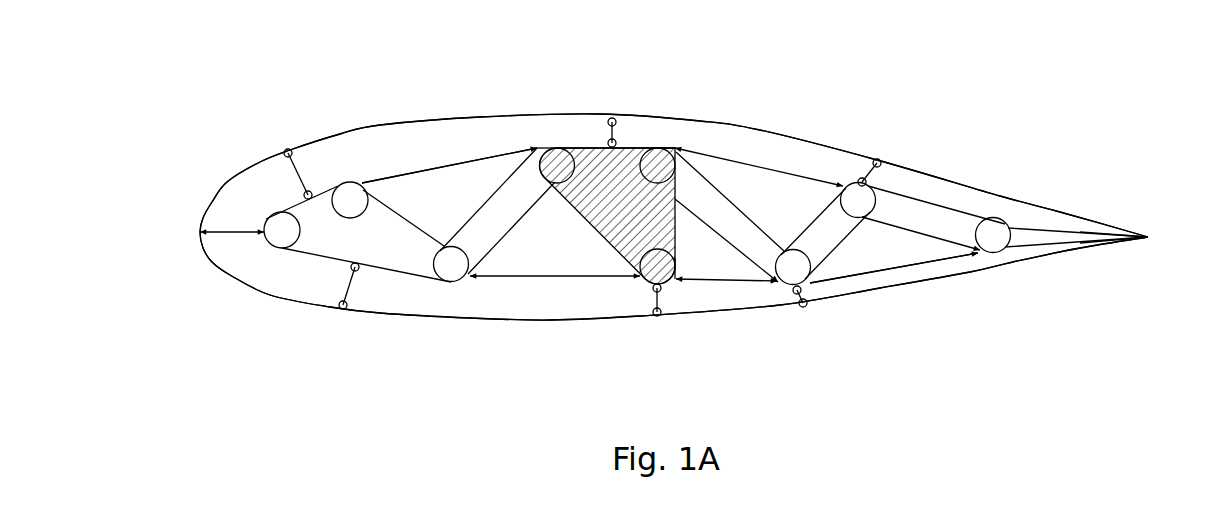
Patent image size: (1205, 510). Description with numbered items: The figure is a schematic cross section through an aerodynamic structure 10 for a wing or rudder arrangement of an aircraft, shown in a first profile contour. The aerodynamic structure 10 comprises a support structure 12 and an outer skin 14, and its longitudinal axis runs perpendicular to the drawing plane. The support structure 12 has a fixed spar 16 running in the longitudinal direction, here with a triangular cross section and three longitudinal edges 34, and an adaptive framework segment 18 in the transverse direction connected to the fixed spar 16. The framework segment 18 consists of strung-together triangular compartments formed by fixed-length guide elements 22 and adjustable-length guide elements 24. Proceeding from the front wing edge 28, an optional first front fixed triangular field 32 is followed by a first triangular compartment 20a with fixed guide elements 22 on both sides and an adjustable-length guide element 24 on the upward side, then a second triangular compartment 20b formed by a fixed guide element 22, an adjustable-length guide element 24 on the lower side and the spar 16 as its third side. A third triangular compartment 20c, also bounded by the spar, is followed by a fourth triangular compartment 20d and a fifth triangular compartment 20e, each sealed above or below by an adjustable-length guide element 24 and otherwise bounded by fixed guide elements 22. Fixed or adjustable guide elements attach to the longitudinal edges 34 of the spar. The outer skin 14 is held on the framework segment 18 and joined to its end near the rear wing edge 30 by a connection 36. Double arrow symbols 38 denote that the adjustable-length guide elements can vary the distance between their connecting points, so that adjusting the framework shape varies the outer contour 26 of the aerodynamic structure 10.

The aerodynamic structure 10 is at (898, 112).
The support structure 12 is at (744, 163).
The outer skin 14 is at (230, 160).
The fixed spar 16 is at (578, 247).
The adaptive framework segment 18 is at (342, 176).
The first triangular compartment 20a is at (444, 198).
The second triangular compartment 20b is at (568, 228).
The third triangular compartment 20c is at (710, 258).
The fourth triangular compartment 20d is at (808, 203).
The fifth triangular compartment 20e is at (873, 247).
The fixed-length guide element 22 is at (617, 197).
The adjustable-length guide element 24 is at (425, 172).
The outer contour 26 is at (996, 160).
The front wing edge 28 is at (198, 222).
The rear wing edge 30 is at (1120, 233).
The first front fixed triangular field 32 is at (330, 235).
The longitudinal edge 34 is at (557, 145).
The connection 36 is at (1025, 237).
The double arrow symbol 38 is at (362, 182).